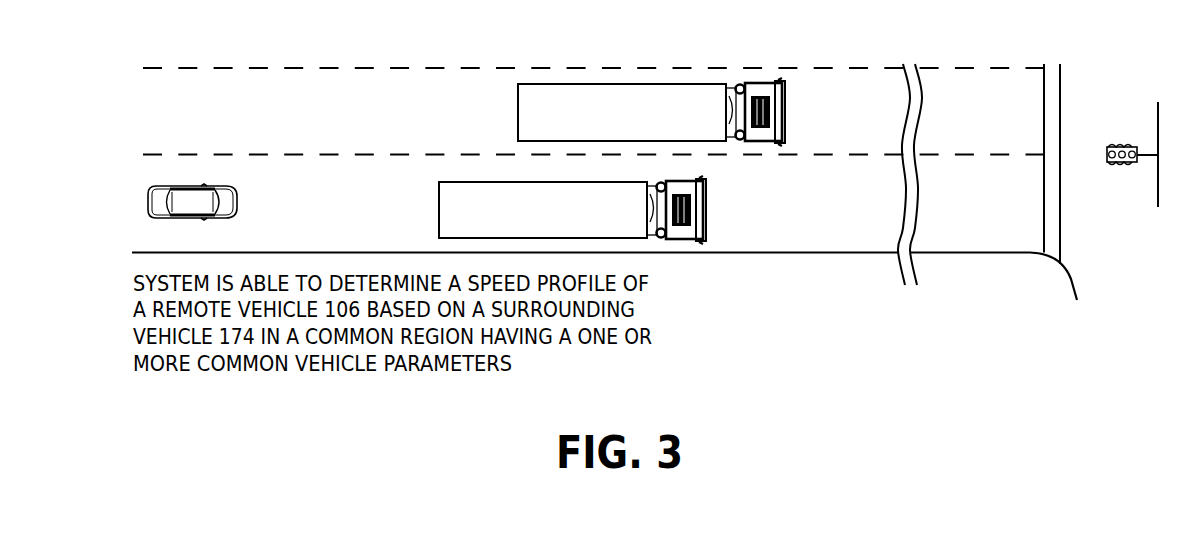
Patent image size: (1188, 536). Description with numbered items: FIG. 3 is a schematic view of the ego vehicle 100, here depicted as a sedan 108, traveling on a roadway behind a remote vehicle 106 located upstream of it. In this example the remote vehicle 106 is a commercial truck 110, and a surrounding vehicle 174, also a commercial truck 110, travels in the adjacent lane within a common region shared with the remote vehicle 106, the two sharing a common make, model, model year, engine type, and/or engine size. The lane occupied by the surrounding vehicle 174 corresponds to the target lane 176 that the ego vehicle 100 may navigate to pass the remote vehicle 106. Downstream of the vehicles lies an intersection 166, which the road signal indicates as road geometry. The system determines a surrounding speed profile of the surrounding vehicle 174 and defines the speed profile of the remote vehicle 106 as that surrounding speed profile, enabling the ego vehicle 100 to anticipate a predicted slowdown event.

The ego vehicle 100 is at (158, 162).
The sedan 108 is at (147, 193).
The remote vehicle 106 is at (438, 215).
The commercial truck 110 is at (571, 130).
The surrounding vehicle 174 is at (517, 120).
The target lane 176 is at (401, 116).
The intersection 166 is at (1115, 127).